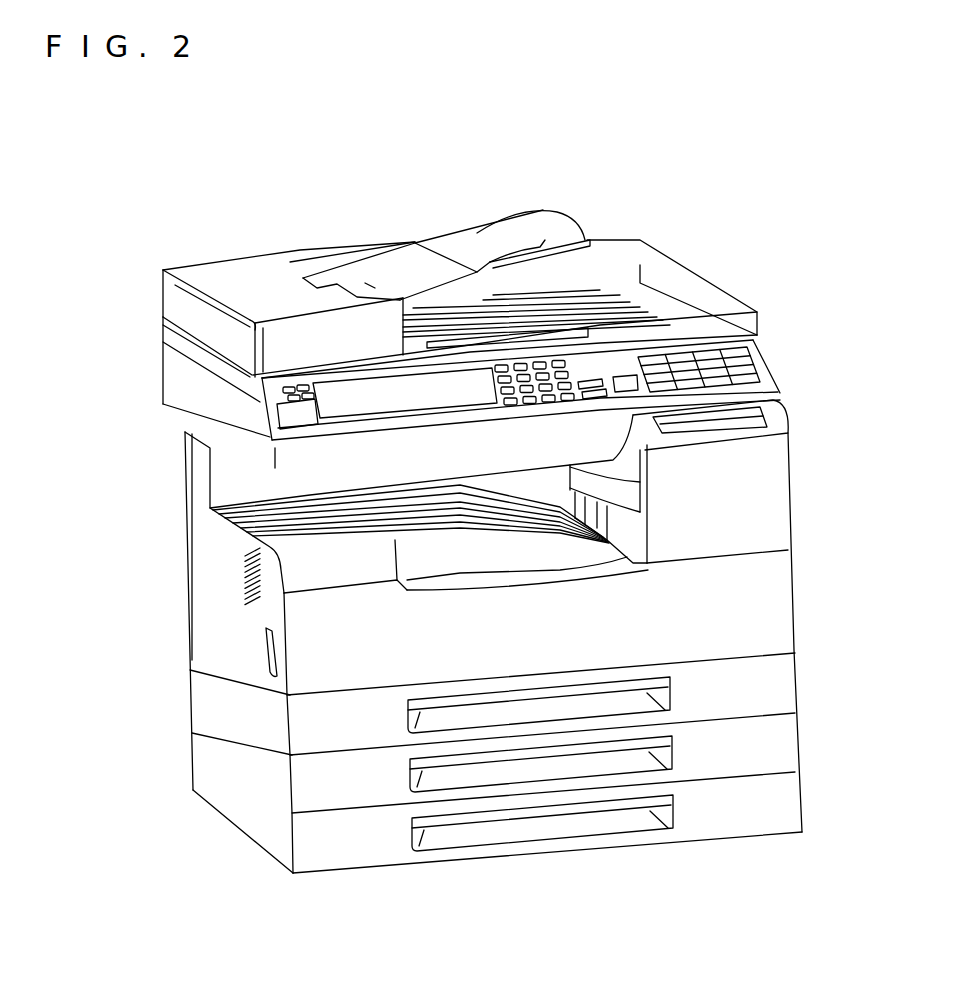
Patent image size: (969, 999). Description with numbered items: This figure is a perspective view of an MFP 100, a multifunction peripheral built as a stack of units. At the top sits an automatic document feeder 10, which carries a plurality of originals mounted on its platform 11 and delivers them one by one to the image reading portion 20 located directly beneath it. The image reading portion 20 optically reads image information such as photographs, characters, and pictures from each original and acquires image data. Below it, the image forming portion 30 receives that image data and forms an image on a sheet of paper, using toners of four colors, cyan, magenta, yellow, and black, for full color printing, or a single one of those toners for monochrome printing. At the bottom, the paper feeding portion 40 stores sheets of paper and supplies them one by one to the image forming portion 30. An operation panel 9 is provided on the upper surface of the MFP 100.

The MFP 100 is at (198, 165).
The automatic document feeder 10 is at (660, 244).
The platform 11 is at (355, 274).
The image reading portion 20 is at (158, 380).
The operation panel 9 is at (600, 373).
The image forming portion 30 is at (800, 549).
The paper feeding portion 40 is at (822, 651).